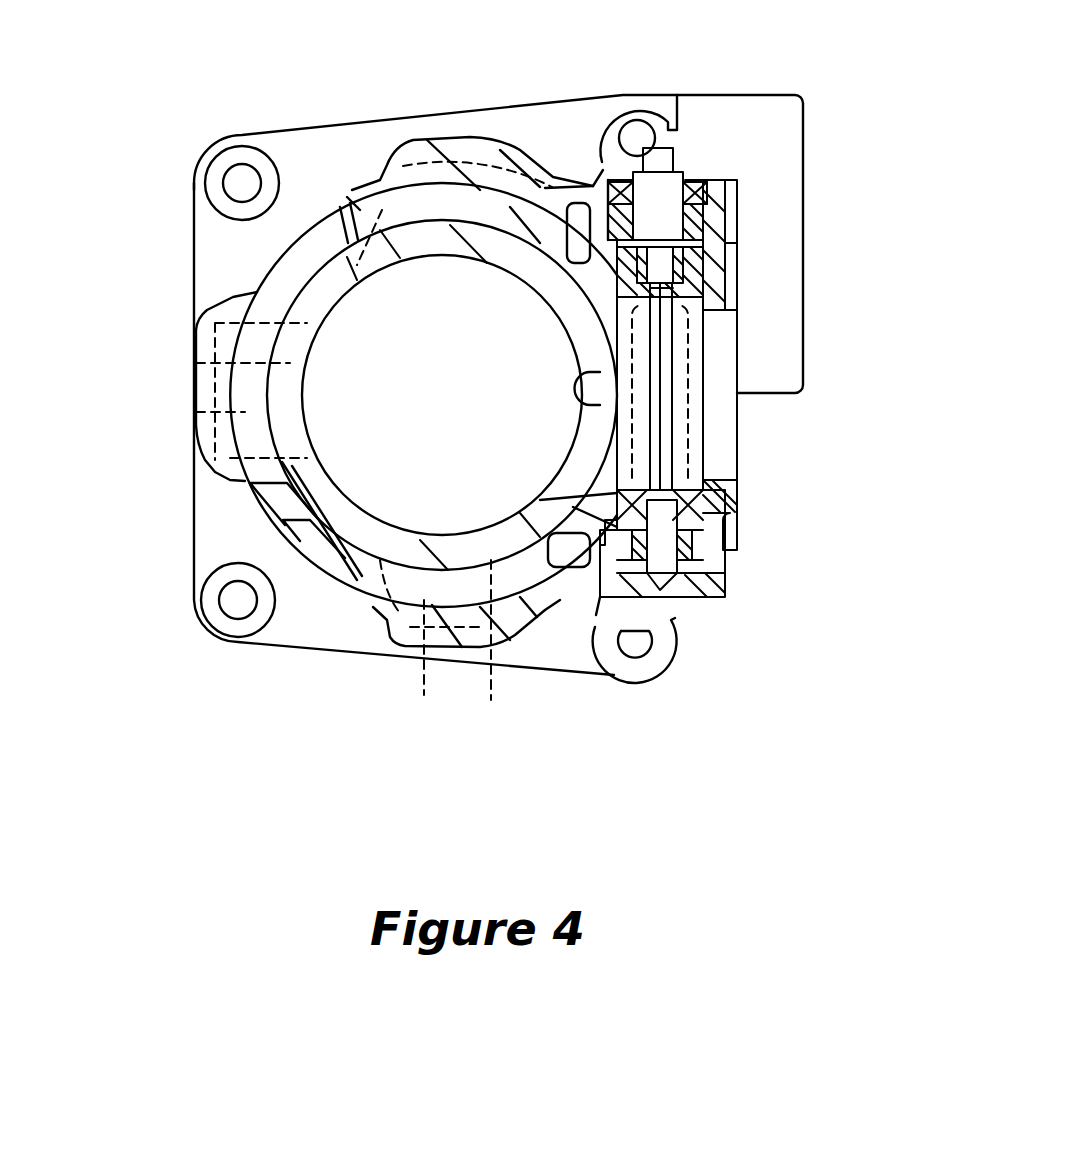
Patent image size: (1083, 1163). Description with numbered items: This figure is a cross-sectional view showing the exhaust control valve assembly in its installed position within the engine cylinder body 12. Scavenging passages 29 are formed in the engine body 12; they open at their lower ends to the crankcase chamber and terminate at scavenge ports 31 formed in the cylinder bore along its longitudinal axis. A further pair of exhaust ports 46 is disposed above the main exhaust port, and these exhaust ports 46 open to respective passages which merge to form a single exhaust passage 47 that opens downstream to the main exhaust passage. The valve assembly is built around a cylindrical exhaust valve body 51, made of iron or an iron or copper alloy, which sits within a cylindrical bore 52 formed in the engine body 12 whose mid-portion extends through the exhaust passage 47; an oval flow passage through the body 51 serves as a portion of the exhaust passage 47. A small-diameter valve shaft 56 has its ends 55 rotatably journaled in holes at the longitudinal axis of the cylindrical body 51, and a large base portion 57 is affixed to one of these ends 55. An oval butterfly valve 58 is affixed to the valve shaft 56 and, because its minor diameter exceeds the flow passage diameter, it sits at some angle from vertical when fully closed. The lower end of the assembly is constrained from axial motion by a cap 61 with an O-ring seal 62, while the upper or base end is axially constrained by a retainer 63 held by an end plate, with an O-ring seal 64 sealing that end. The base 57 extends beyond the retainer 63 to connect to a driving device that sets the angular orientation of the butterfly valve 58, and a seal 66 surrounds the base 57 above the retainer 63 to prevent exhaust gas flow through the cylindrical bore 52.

The engine cylinder body 12 is at (265, 126).
The scavenging passages 29 is at (437, 205).
The scavenge ports 31 is at (470, 215).
The exhaust ports 46 is at (572, 325).
The exhaust passage 47 is at (723, 460).
The cylindrical exhaust valve body 51 is at (735, 345).
The cylindrical bore 52 is at (705, 288).
The ends of the valve shaft 55 is at (670, 597).
The valve shaft 56 is at (608, 265).
The base portion 57 is at (683, 148).
The butterfly valve 58 is at (690, 375).
The cap 61 is at (703, 598).
The O-ring seal 62 is at (738, 575).
The retainer 63 is at (735, 212).
The O-ring seal 64 is at (730, 183).
The seal 66 is at (622, 177).